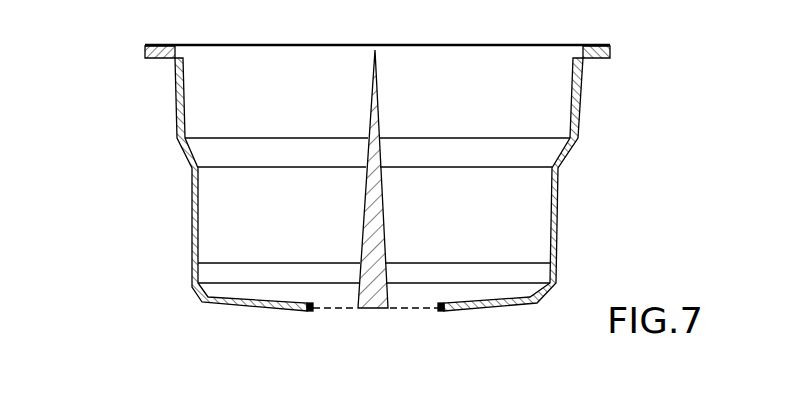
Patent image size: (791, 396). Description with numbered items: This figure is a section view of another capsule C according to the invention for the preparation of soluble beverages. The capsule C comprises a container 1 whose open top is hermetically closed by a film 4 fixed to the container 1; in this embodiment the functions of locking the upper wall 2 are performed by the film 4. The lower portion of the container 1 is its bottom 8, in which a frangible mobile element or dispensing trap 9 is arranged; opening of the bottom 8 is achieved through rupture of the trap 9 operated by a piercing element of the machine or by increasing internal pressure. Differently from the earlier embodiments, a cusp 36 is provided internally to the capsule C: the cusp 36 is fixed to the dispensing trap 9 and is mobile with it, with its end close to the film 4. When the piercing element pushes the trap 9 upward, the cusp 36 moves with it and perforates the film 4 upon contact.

The container 1 is at (558, 208).
The upper wall 2 is at (585, 58).
The film 4 is at (216, 46).
The bottom 8 is at (505, 310).
The dispensing trap 9 is at (411, 311).
The cusp 36 is at (372, 233).
The capsule C is at (178, 232).